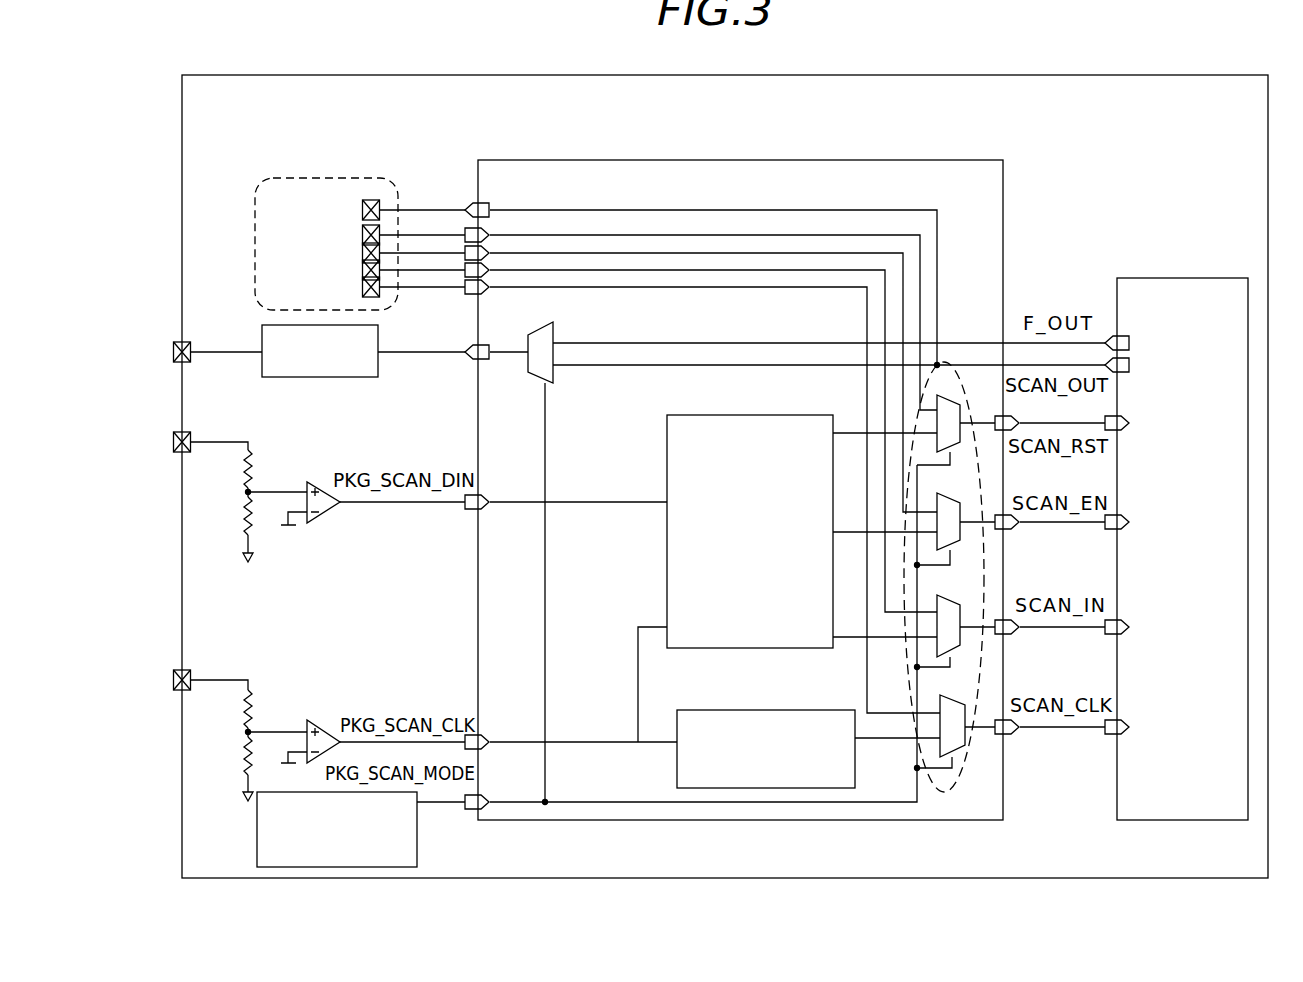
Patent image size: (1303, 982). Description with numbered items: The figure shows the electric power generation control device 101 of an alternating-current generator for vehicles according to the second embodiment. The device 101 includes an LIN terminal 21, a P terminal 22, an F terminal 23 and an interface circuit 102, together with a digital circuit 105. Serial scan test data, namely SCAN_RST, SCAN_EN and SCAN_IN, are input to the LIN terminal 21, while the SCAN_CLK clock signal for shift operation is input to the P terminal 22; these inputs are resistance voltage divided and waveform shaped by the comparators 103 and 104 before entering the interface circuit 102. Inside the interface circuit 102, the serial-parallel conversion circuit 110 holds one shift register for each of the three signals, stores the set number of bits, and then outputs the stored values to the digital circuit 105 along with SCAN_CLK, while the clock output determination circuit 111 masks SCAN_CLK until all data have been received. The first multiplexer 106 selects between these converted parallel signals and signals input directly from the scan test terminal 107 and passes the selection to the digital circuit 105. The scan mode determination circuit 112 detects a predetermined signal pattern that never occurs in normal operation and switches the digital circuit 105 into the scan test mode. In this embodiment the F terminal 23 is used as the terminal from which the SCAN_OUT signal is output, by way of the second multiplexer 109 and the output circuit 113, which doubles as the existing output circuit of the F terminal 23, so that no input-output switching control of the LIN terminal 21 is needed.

The electric power generation control device 101 is at (905, 75).
The interface circuit 102 is at (710, 160).
The comparator 103 is at (320, 513).
The comparator 104 is at (322, 728).
The digital circuit 105 is at (1170, 278).
The first multiplexer 106 is at (970, 742).
The scan test terminal 107 is at (350, 178).
The second multiplexer 109 is at (553, 380).
The serial-parallel conversion circuit 110 is at (755, 415).
The clock output determination circuit 111 is at (765, 710).
The scan mode determination circuit 112 is at (417, 825).
The output circuit 113 is at (378, 377).
The LIN terminal 21 is at (172, 432).
The P terminal 22 is at (172, 672).
The F terminal 23 is at (172, 343).